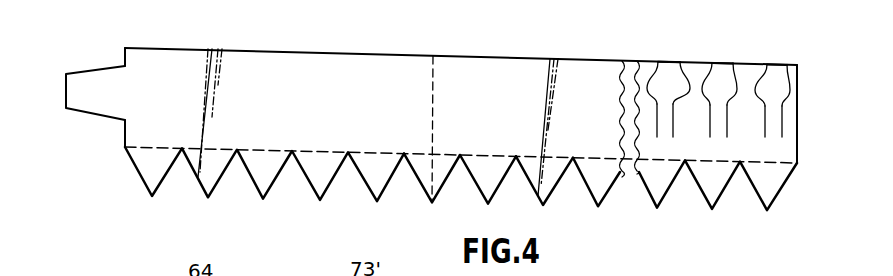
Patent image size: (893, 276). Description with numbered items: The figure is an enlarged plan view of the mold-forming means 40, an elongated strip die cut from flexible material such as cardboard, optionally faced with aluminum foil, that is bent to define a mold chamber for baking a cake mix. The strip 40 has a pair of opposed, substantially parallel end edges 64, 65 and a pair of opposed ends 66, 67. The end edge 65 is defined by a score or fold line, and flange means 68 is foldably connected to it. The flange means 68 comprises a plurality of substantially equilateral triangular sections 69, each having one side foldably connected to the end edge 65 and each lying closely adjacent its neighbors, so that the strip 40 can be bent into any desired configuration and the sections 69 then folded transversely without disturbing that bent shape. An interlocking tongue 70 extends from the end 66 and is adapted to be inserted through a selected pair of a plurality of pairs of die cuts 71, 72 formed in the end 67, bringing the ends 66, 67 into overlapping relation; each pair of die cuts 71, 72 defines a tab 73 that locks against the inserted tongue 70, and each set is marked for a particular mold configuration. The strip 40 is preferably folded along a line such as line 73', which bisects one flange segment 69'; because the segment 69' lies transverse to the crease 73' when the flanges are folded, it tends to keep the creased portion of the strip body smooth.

The mold-forming means 40 is at (562, 73).
The end edge 64 is at (302, 50).
The end edge 65 is at (274, 148).
The end 66 is at (125, 62).
The end 67 is at (800, 69).
The flange means 68 is at (528, 204).
The triangular section 69 is at (488, 193).
The flange segment 69' is at (427, 194).
The interlocking tongue 70 is at (81, 82).
The die cut 71 is at (661, 61).
The die cut 72 is at (680, 62).
The tab 73 is at (749, 133).
The fold line 73' is at (464, 110).